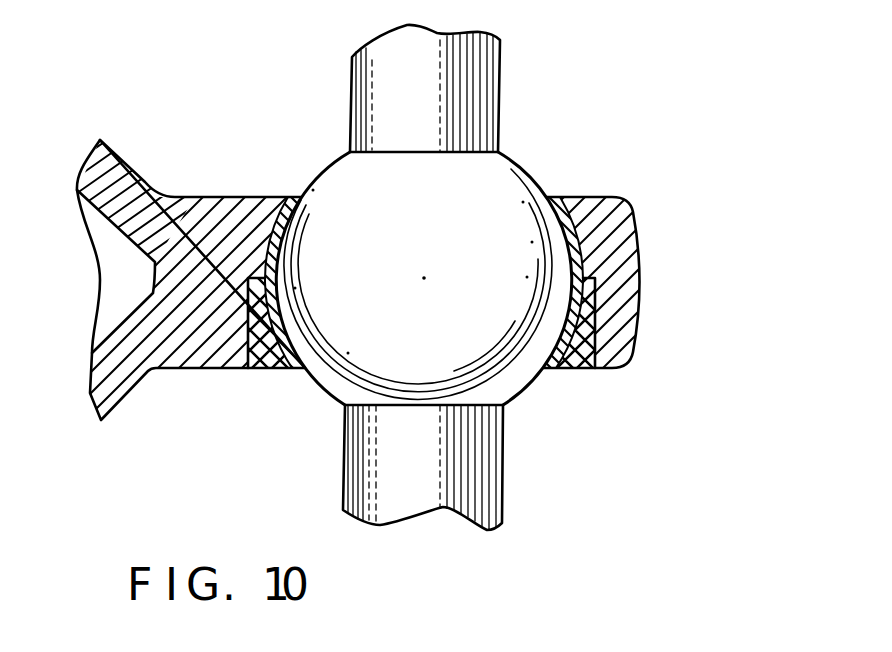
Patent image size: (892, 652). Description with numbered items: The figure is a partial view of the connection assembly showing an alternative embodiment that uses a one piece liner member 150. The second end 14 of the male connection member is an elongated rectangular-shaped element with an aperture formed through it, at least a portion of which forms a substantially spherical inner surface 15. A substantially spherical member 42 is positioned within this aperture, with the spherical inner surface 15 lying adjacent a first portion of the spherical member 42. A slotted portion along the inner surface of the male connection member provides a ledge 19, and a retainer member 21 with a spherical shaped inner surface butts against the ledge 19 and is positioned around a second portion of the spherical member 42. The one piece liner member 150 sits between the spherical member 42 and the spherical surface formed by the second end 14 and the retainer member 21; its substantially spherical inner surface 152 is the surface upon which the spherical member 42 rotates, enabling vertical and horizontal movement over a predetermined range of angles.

The second end 14 is at (628, 208).
The substantially spherical inner surface 15 is at (580, 246).
The ledge 19 is at (597, 293).
The retainer member 21 is at (585, 340).
The substantially spherical member 42 is at (323, 177).
The one piece liner member 150 is at (273, 232).
The substantially spherical inner surface 152 is at (311, 385).